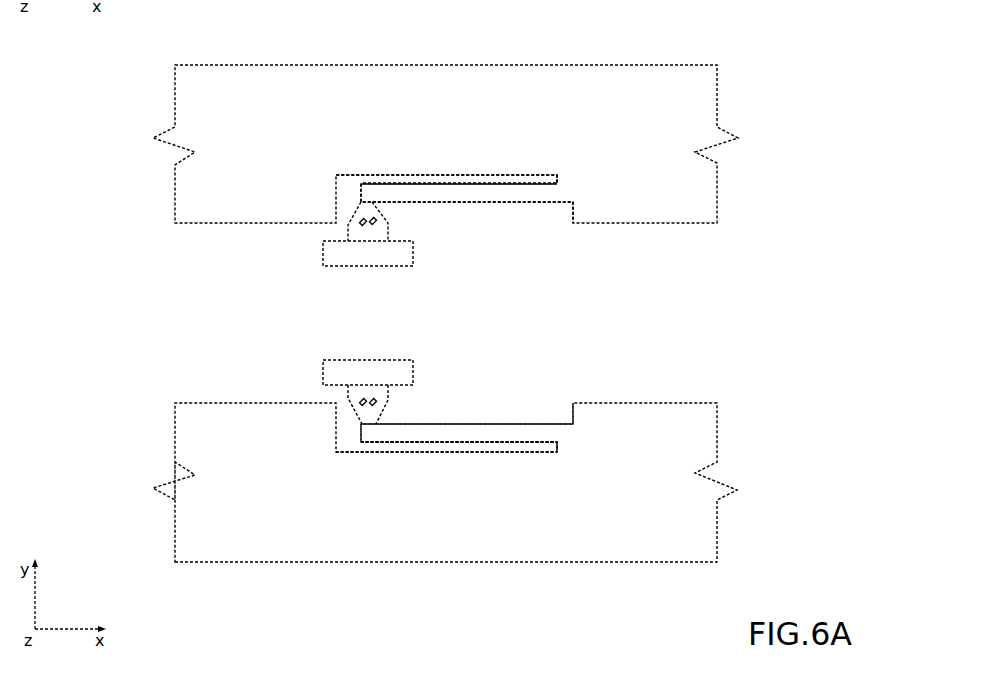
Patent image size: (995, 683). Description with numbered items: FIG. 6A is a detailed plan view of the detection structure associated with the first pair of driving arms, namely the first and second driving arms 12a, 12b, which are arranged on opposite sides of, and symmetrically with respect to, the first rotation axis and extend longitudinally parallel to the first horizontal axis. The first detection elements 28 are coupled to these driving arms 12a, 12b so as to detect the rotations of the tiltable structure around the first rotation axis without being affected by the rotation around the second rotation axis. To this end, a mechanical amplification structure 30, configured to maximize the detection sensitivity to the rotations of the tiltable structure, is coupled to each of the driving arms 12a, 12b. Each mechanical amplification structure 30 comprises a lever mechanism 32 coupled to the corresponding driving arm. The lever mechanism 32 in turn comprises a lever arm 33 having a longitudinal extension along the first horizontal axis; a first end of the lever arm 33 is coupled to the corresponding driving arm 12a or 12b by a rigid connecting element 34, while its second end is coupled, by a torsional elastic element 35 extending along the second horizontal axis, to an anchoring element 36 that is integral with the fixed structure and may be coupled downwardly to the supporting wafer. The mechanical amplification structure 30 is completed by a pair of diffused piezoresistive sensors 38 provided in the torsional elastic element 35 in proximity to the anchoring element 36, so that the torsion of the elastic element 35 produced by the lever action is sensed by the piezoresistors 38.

The first driving arm 12a is at (690, 128).
The second driving arm 12b is at (689, 507).
The first detection elements 28 is at (488, 292).
The mechanical amplification structure 30 is at (400, 170).
The lever mechanism 32 is at (433, 190).
The lever arm 33 is at (470, 197).
The rigid connecting element 34 is at (566, 182).
The torsional elastic element 35 is at (355, 215).
The anchoring element 36 is at (408, 253).
The diffused piezoresistive sensors 38 is at (373, 228).